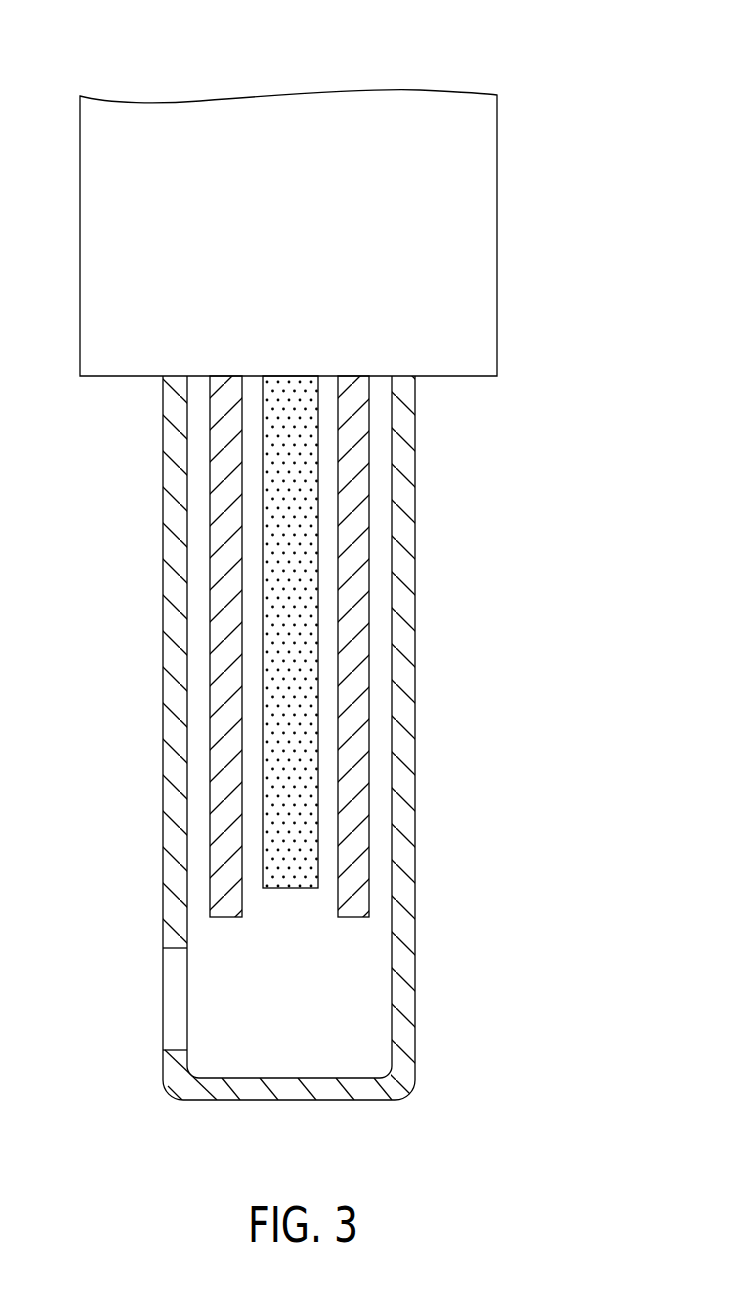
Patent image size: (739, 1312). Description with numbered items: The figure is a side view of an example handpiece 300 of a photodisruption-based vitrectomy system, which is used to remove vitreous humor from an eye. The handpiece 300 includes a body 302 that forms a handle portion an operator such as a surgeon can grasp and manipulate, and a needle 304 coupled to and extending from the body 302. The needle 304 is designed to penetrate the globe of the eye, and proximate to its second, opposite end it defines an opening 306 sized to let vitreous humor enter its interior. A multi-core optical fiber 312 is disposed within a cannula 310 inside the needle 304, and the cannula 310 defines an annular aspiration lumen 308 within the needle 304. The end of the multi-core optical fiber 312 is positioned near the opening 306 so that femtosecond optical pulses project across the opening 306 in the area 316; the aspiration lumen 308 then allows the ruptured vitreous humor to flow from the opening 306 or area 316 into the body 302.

The handpiece 300 is at (637, 85).
The body 302 is at (497, 262).
The needle 304 is at (415, 590).
The opening 306 is at (124, 1013).
The aspiration lumen 308 is at (197, 562).
The cannula 310 is at (367, 500).
The multi-core optical fiber 312 is at (278, 888).
The area 316 is at (366, 1024).